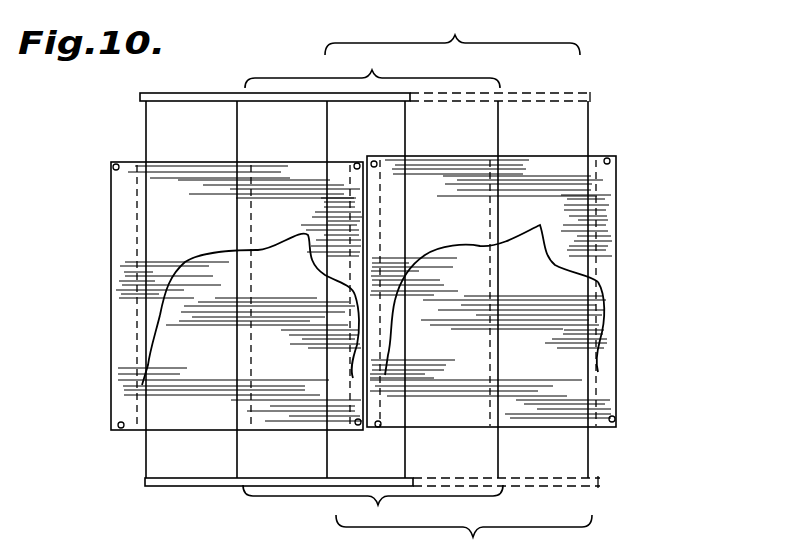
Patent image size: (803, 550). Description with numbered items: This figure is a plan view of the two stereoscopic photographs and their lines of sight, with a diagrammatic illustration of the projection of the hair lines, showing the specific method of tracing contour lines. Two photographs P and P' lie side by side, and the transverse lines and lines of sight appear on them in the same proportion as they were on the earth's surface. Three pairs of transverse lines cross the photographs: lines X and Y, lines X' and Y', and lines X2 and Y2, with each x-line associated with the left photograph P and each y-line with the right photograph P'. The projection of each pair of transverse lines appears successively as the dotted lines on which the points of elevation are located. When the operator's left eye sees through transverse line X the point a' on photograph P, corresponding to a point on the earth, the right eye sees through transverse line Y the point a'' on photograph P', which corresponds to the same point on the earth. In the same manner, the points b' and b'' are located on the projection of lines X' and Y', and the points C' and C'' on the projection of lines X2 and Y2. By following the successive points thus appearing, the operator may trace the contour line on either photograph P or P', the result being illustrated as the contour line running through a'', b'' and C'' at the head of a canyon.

The photograph P is at (210, 296).
The photograph P' is at (530, 291).
The transverse line X is at (151, 289).
The transverse line X' is at (248, 289).
The transverse line X2 is at (340, 289).
The transverse line Y is at (401, 289).
The transverse line Y' is at (504, 289).
The transverse line Y2 is at (600, 289).
The point of elevation a' is at (136, 358).
The point of elevation a'' is at (393, 347).
The point of elevation b' is at (257, 271).
The point of elevation b'' is at (496, 261).
The point of elevation C' is at (346, 336).
The point of elevation C'' is at (607, 327).